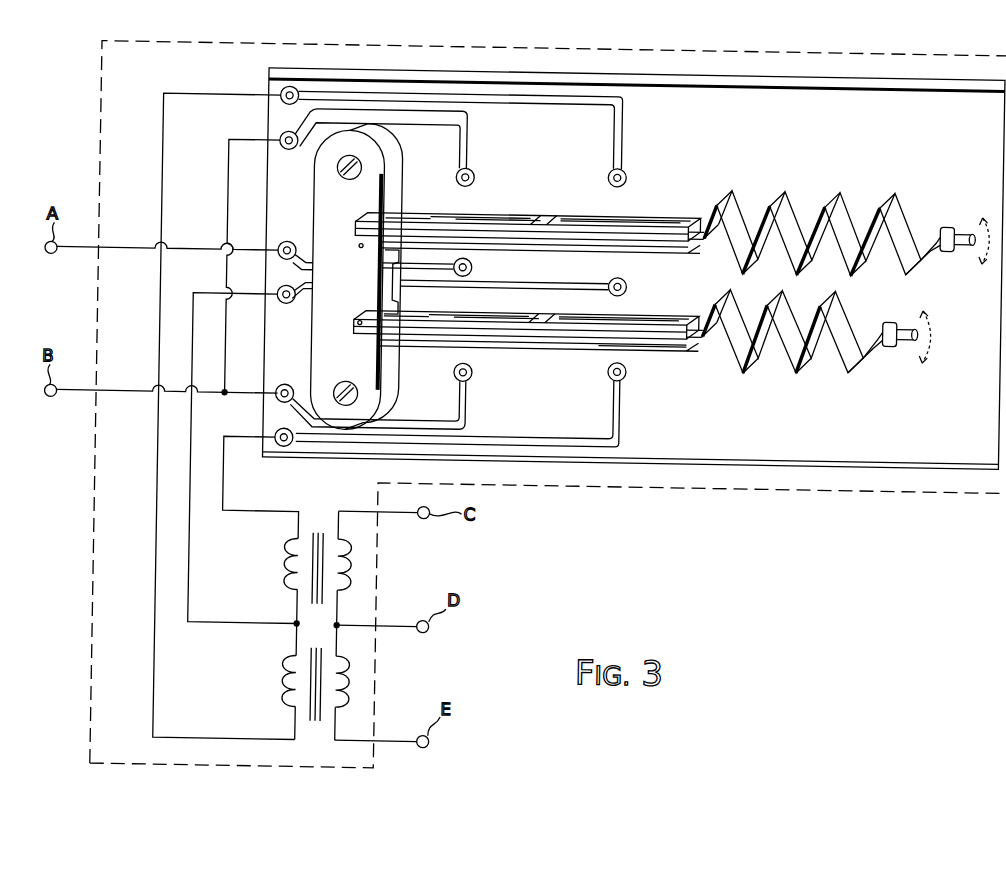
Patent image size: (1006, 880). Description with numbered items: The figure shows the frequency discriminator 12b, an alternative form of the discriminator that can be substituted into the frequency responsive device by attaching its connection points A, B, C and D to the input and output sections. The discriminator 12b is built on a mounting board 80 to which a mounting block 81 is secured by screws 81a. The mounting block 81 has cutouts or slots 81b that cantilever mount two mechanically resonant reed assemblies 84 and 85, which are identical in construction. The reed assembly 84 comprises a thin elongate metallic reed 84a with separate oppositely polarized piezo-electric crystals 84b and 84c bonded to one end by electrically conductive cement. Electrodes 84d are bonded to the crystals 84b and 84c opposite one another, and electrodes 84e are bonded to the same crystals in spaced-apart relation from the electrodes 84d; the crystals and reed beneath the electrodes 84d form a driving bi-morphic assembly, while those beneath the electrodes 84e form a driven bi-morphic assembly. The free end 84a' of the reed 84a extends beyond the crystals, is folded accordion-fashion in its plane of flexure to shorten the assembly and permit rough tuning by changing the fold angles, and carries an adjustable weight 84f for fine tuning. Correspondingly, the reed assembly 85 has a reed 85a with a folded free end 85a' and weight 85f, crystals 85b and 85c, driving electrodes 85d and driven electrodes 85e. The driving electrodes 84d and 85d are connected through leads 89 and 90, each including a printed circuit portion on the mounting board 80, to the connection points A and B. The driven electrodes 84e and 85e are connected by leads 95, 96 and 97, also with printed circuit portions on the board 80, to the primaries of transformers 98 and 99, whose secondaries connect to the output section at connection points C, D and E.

The frequency discriminator 12b is at (98, 122).
The mounting board 80 is at (292, 78).
The mounting block 81 is at (337, 276).
The screws 81a is at (336, 166).
The cutouts or slots 81b is at (361, 319).
The reed assembly 84 is at (673, 208).
The reed 84a is at (696, 207).
The free end of reed 84a' is at (822, 214).
The piezo-electric crystal 84b is at (564, 211).
The piezo-electric crystal 84c is at (574, 246).
The electrodes 84d is at (428, 219).
The electrodes 84e is at (642, 214).
The adjustable weight 84f is at (946, 214).
The reed assembly 85 is at (641, 342).
The reed 85a is at (695, 360).
The free end of reed 85a' is at (791, 352).
The piezo-electric crystal 85b is at (654, 310).
The piezo-electric crystal 85c is at (646, 342).
The electrodes 85d is at (428, 334).
The electrodes 85e is at (564, 338).
The adjustable weight 85f is at (890, 338).
The lead 89 is at (226, 190).
The lead 90 is at (138, 248).
The lead 95 is at (258, 738).
The lead 96 is at (258, 623).
The lead 97 is at (258, 512).
The transformer 98 is at (328, 722).
The transformer 99 is at (324, 530).